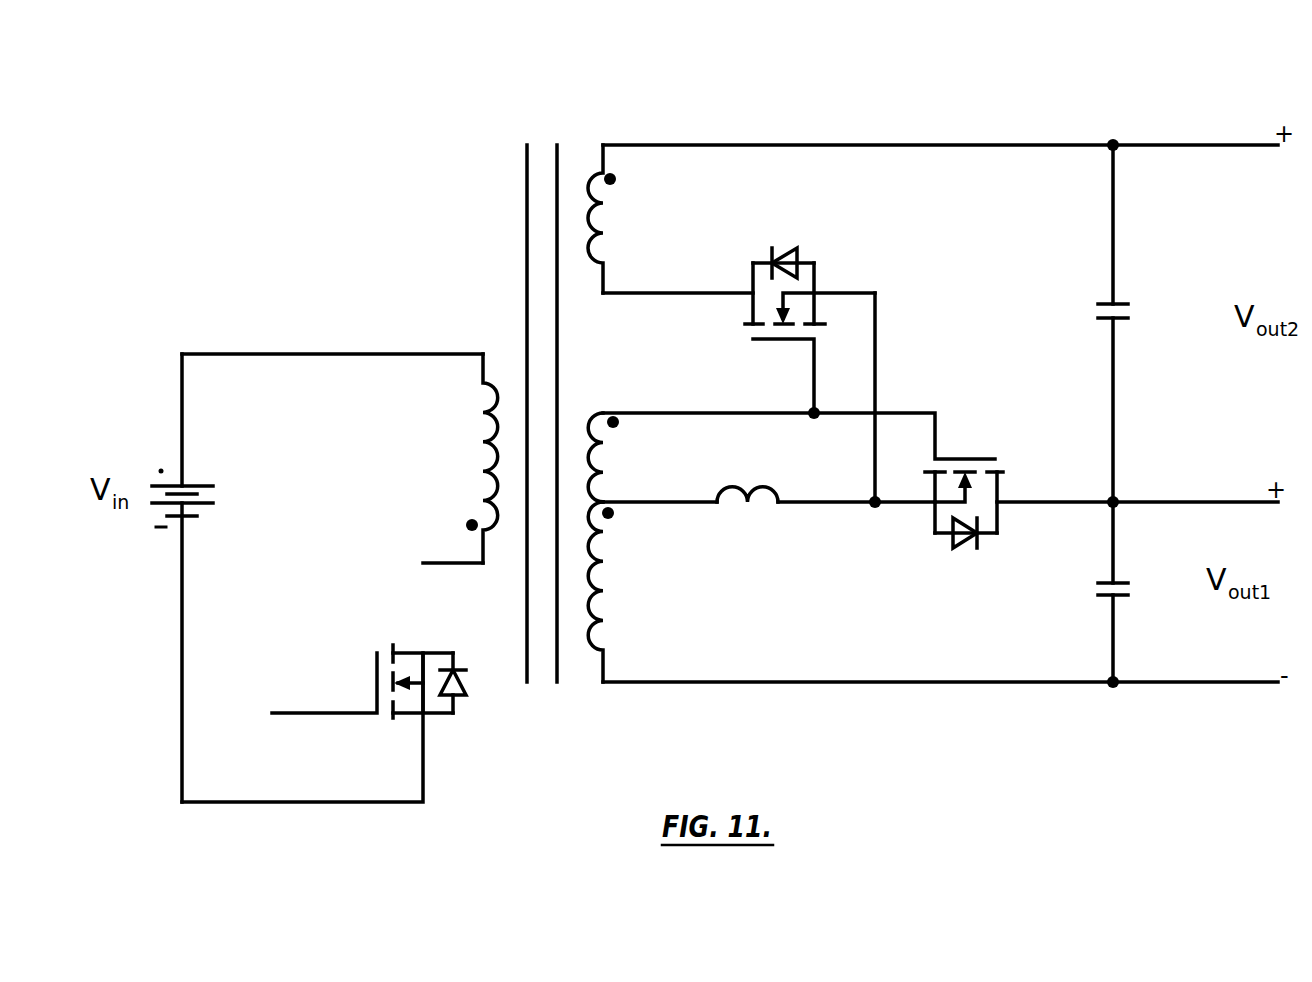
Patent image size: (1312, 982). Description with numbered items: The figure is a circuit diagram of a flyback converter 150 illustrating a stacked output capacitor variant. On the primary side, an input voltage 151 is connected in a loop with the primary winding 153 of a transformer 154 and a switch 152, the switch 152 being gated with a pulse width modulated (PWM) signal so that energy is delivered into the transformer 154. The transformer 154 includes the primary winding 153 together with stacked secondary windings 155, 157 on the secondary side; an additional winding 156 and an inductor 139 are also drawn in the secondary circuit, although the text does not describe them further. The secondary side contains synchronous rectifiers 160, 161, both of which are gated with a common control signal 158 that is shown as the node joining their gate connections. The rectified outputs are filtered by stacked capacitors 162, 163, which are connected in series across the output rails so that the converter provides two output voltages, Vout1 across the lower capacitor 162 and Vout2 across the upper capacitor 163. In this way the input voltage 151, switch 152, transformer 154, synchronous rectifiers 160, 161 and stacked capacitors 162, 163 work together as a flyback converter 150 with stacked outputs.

The inductor 139 is at (745, 506).
The flyback converter 150 is at (877, 113).
The input voltage 151 is at (153, 446).
The switch 152 is at (462, 734).
The primary winding 153 is at (450, 448).
The transformer 154 is at (500, 218).
The stacked secondary winding 155 is at (630, 610).
The second secondary winding 156 is at (617, 457).
The stacked secondary winding 157 is at (627, 213).
The common control signal 158 is at (875, 507).
The synchronous rectifier 160 is at (836, 264).
The synchronous rectifier 161 is at (978, 445).
The stacked capacitor 162 is at (1100, 596).
The stacked capacitor 163 is at (1100, 305).